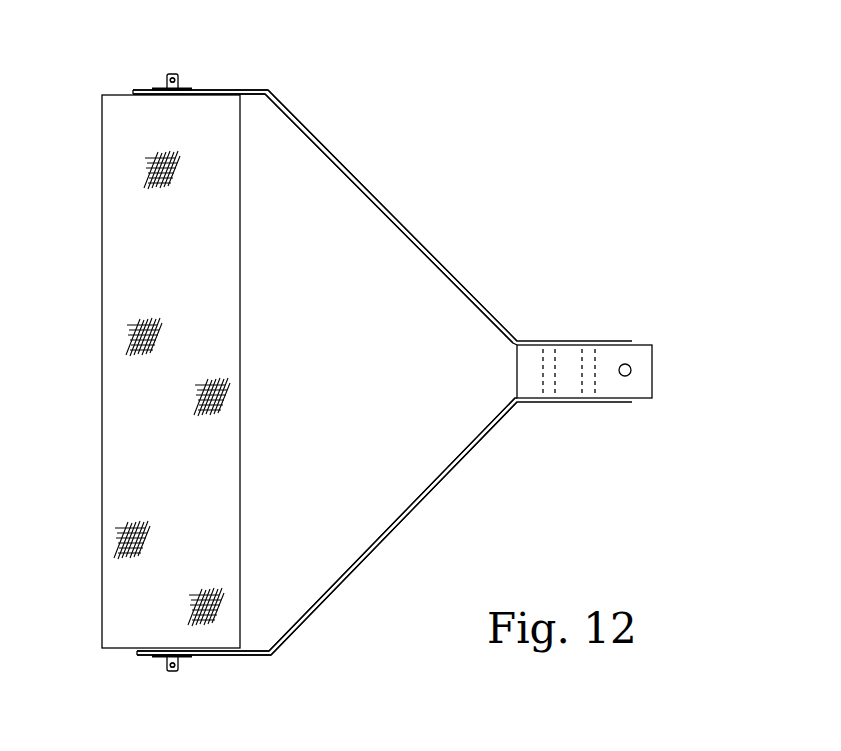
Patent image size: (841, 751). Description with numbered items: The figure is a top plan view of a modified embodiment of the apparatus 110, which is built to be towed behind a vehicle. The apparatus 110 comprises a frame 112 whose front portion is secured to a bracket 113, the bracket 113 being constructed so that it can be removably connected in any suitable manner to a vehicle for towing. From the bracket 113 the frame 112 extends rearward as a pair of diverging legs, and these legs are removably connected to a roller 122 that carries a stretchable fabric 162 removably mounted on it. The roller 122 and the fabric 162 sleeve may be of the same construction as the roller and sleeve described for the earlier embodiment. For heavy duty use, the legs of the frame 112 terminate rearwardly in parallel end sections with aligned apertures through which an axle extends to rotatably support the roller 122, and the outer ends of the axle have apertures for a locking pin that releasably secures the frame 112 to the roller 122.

The apparatus 110 is at (462, 110).
The frame 112 is at (450, 268).
The bracket 113 is at (631, 370).
The roller 122 is at (102, 281).
The stretchable fabric 162 is at (227, 447).